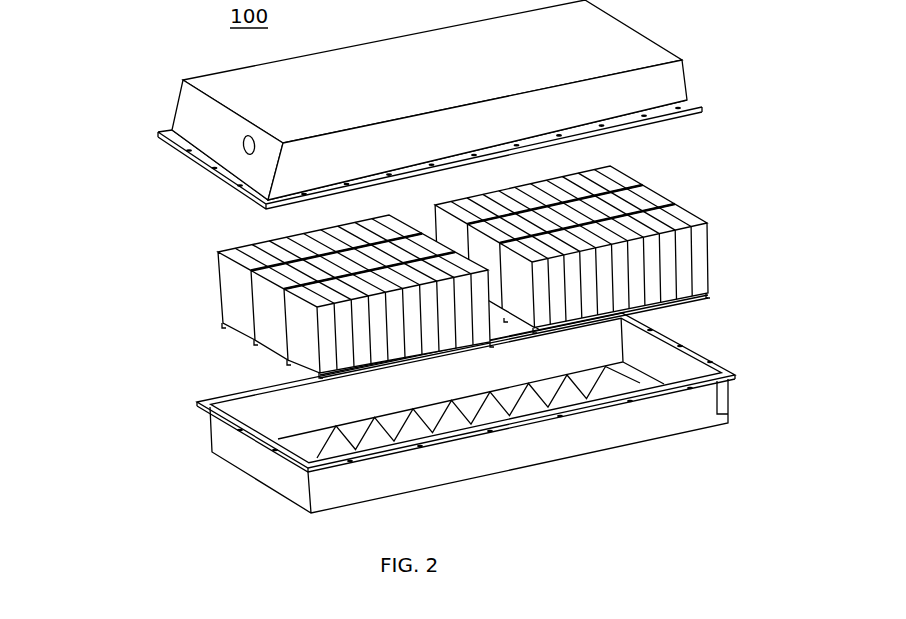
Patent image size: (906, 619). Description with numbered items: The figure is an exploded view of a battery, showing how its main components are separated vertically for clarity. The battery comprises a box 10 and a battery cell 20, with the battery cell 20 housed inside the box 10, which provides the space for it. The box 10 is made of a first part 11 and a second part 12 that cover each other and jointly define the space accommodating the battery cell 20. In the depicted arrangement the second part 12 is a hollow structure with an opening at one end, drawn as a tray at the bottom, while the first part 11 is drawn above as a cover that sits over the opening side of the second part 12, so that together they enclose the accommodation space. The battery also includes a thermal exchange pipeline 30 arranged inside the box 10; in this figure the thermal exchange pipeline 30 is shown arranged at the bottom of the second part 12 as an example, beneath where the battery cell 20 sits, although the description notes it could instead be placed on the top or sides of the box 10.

The box 10 is at (90, 262).
The first part 11 is at (225, 138).
The second part 12 is at (203, 427).
The battery cell 20 is at (680, 258).
The thermal exchange pipeline 30 is at (622, 405).